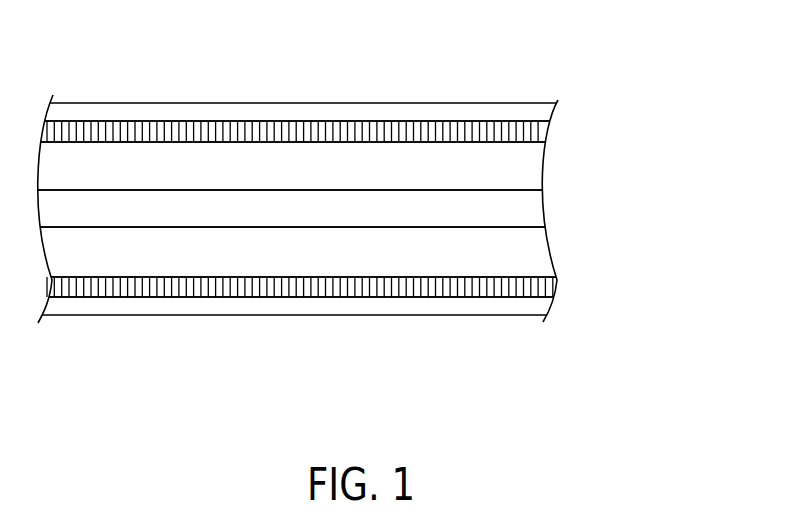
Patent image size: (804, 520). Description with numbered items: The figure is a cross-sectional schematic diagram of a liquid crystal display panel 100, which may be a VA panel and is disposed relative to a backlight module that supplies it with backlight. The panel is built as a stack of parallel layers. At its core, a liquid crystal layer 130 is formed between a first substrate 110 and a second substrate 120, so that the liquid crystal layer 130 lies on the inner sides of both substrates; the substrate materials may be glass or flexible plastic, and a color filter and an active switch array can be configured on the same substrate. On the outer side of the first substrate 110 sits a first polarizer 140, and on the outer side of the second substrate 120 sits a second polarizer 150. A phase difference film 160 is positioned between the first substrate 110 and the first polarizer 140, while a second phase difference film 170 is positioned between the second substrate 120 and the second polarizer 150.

The liquid crystal display panel 100 is at (624, 76).
The first substrate 110 is at (530, 170).
The second substrate 120 is at (543, 265).
The liquid crystal layer 130 is at (538, 215).
The first polarizer 140 is at (523, 112).
The second polarizer 150 is at (543, 307).
The phase difference film 160 is at (545, 125).
The phase difference film 170 is at (555, 288).